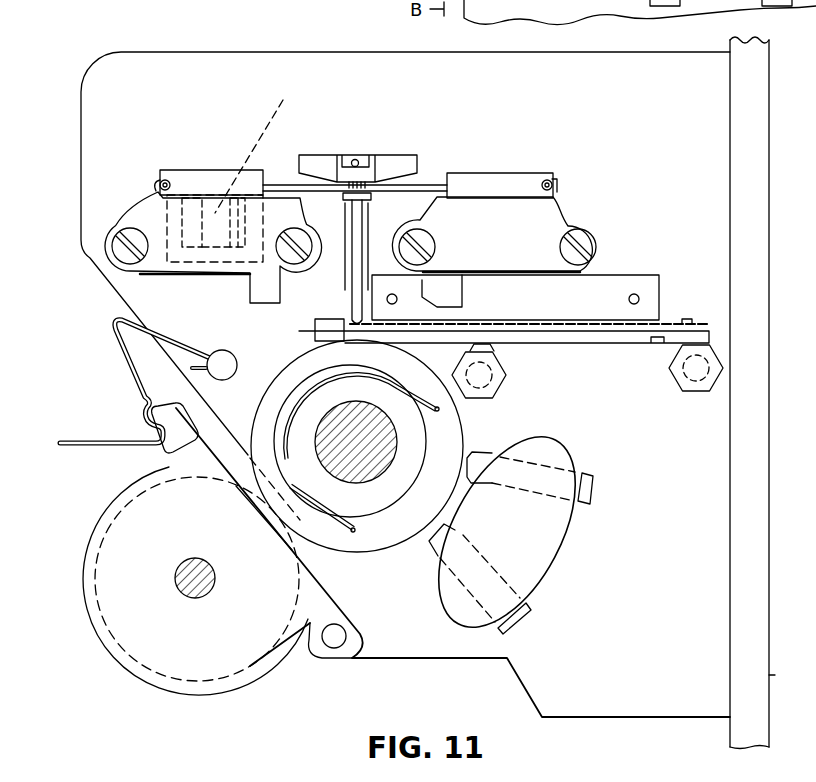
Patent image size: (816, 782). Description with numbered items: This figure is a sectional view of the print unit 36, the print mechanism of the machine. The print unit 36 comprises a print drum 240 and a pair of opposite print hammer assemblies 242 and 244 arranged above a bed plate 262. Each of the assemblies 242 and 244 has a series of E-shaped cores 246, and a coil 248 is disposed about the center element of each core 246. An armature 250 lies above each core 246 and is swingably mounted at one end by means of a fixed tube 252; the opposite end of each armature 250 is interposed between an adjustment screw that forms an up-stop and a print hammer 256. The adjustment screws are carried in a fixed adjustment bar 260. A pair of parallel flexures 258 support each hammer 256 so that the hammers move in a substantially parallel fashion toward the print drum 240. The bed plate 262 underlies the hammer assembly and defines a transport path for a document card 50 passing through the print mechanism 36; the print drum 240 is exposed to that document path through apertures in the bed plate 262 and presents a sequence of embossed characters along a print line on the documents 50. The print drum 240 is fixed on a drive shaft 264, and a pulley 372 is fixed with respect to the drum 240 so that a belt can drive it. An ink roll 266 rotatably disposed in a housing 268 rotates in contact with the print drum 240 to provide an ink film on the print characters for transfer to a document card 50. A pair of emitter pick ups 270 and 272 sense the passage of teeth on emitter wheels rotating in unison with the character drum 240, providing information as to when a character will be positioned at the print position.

The print unit 36 is at (113, 50).
The print hammer assembly 242 is at (134, 200).
The print hammer assembly 244 is at (598, 204).
The E-shaped core 246 is at (215, 258).
The coil 248 is at (264, 142).
The armature 250 is at (283, 182).
The fixed tube 252 is at (551, 183).
The print hammer 256 is at (362, 238).
The parallel flexures 258 is at (418, 268).
The fixed adjustment bar 260 is at (326, 157).
The document card 50 is at (669, 330).
The bed plate 262 is at (602, 338).
The print drum 240 is at (464, 423).
The pulley 372 is at (427, 457).
The drive shaft 264 is at (383, 473).
The ink roll 266 is at (245, 664).
The housing 268 is at (118, 662).
The emitter pick up 270 is at (592, 485).
The emitter pick up 272 is at (530, 612).